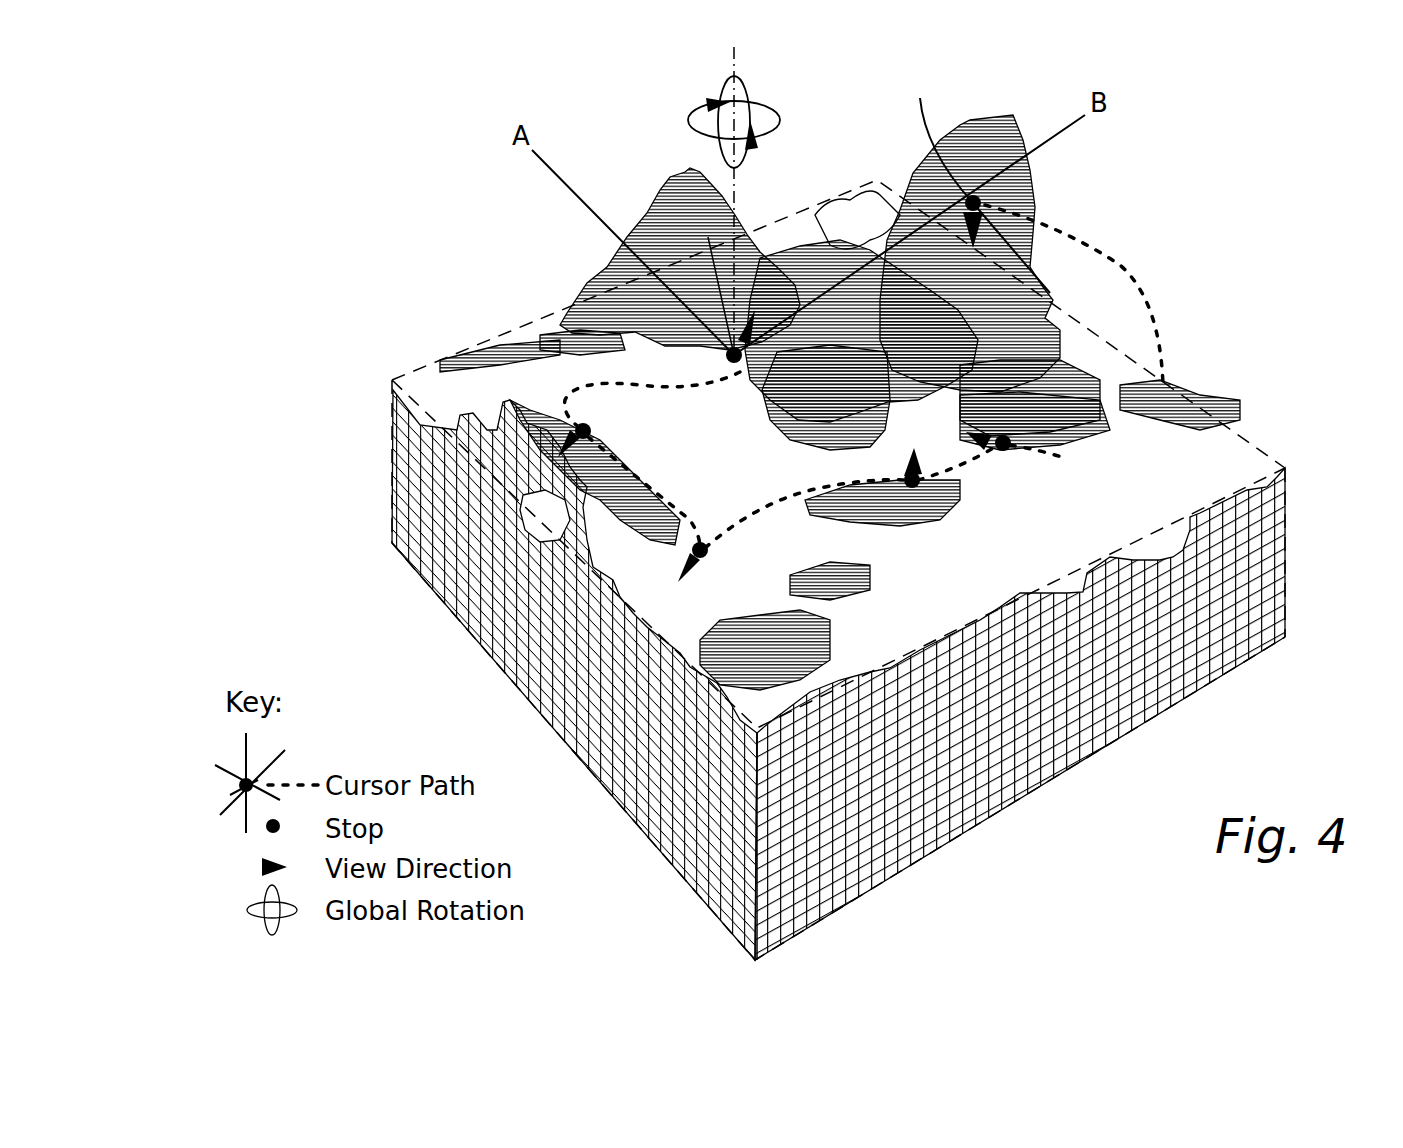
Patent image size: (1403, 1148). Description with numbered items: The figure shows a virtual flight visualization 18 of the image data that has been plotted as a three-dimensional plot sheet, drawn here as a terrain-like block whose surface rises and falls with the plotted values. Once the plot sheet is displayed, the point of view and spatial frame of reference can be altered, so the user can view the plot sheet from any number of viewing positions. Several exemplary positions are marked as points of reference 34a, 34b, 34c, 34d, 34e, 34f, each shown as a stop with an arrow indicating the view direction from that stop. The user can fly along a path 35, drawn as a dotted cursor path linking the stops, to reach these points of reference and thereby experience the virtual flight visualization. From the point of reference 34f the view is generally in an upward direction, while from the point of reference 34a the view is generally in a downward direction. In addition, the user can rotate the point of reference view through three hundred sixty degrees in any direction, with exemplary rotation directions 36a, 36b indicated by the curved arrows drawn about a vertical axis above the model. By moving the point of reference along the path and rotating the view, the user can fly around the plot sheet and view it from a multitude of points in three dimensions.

The virtual flight visualization 18 is at (1225, 240).
The point of reference 34a is at (985, 185).
The point of reference 34b is at (1008, 452).
The point of reference 34c is at (918, 490).
The point of reference 34d is at (712, 545).
The point of reference 34e is at (592, 428).
The point of reference 34f is at (734, 365).
The path 35 is at (1096, 252).
The rotation direction 36a is at (768, 118).
The rotation direction 36b is at (700, 118).